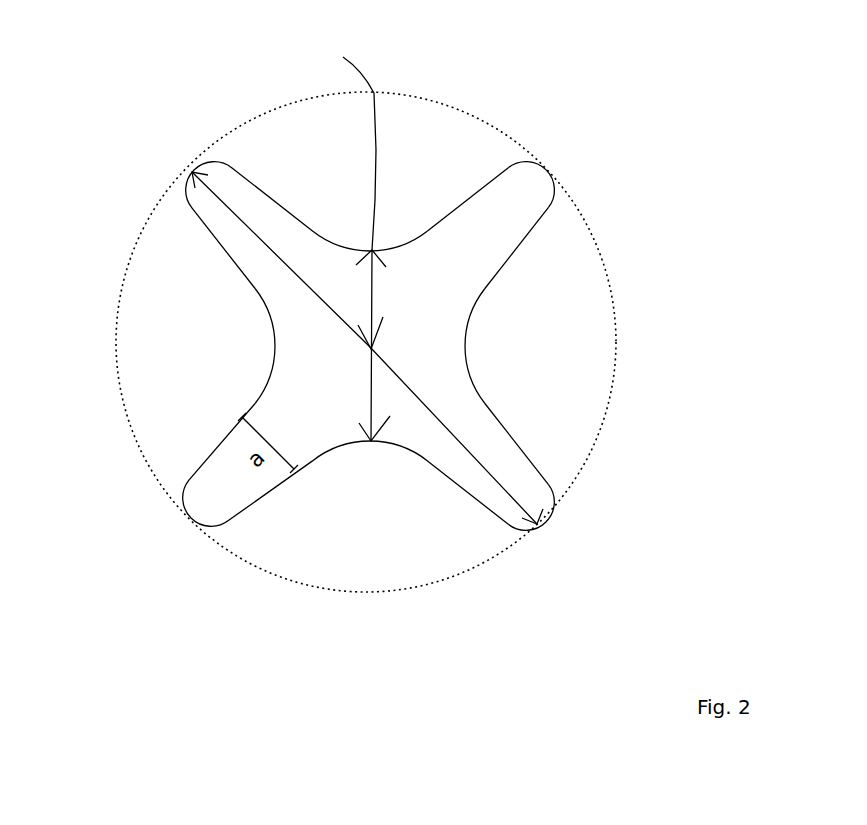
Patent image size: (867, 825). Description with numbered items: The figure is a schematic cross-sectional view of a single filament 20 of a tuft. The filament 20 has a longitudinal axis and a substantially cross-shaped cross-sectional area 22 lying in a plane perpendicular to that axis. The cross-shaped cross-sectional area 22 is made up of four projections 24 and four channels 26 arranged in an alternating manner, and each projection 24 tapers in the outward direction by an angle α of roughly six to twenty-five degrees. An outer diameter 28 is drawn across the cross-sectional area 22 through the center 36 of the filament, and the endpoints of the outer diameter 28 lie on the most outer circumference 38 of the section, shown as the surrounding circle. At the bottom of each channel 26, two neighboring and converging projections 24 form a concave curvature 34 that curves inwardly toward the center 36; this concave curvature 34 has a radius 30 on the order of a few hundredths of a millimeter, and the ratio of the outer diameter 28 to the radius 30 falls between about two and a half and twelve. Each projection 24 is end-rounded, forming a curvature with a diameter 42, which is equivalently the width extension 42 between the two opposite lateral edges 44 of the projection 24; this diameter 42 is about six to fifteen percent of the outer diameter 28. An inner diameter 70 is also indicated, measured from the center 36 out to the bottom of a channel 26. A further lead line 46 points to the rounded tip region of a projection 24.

The filament 20 is at (543, 87).
The cross-shaped cross-sectional area 22 is at (514, 462).
The projection 24 is at (534, 510).
The channel 26 is at (558, 353).
The outer diameter 28 is at (230, 210).
The radius 30 is at (274, 341).
The concave curvature 34 is at (267, 333).
The center 36 is at (358, 229).
The most outer circumference 38 is at (604, 222).
The diameter 42 is at (538, 205).
The lateral edge 44 is at (468, 197).
The lobe tip end 46 is at (557, 187).
The inner diameter 70 is at (365, 287).